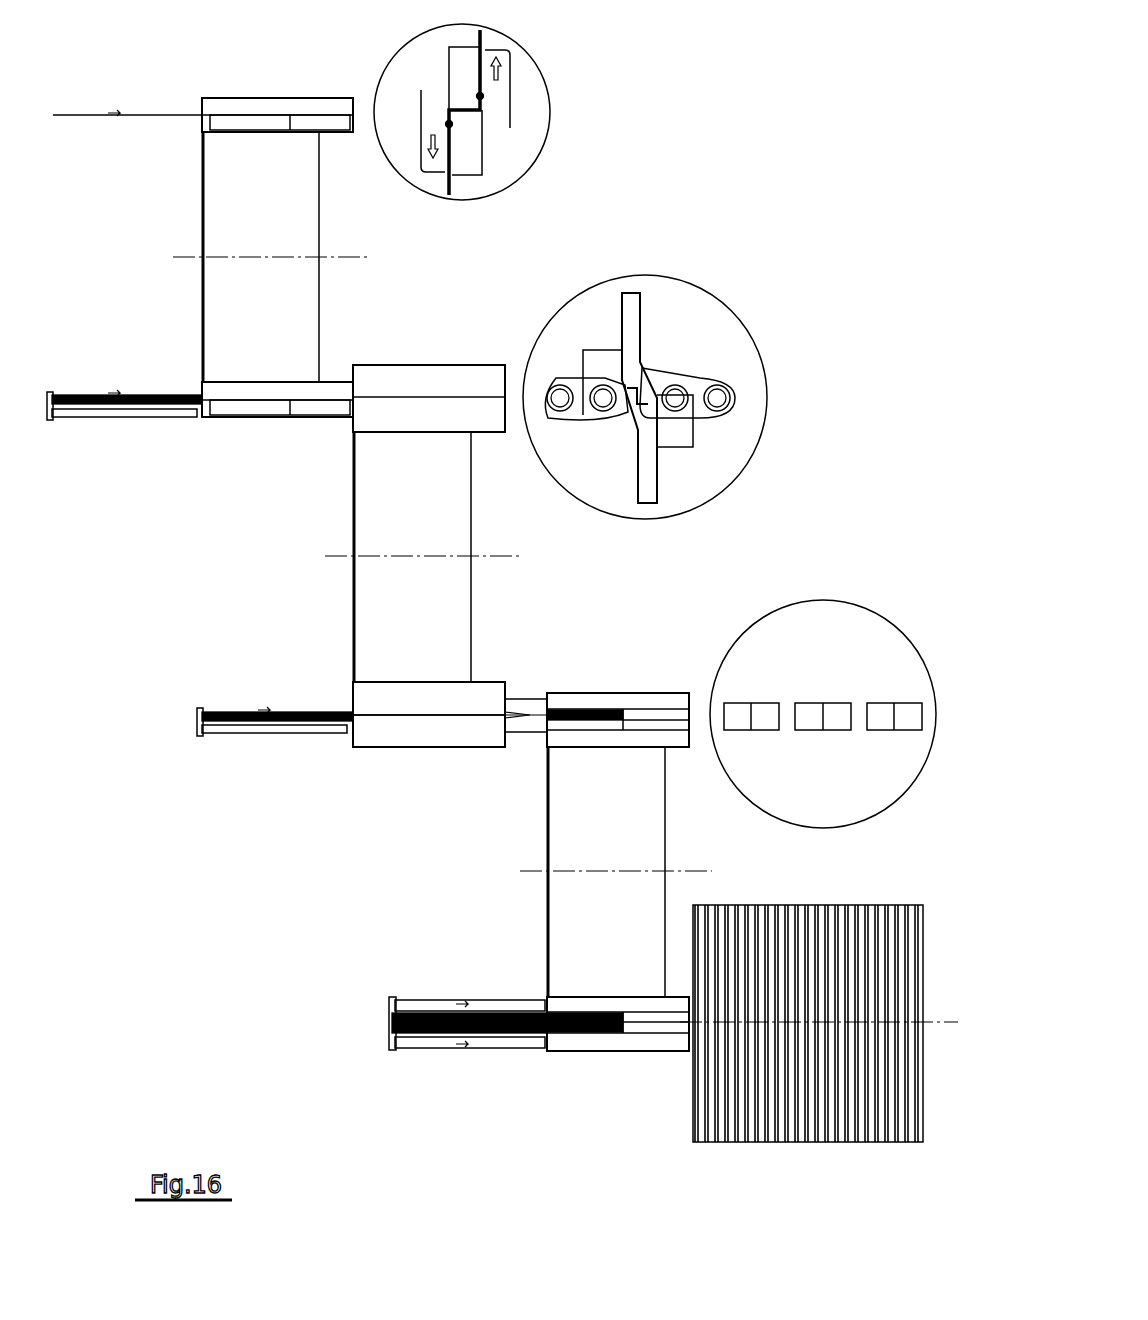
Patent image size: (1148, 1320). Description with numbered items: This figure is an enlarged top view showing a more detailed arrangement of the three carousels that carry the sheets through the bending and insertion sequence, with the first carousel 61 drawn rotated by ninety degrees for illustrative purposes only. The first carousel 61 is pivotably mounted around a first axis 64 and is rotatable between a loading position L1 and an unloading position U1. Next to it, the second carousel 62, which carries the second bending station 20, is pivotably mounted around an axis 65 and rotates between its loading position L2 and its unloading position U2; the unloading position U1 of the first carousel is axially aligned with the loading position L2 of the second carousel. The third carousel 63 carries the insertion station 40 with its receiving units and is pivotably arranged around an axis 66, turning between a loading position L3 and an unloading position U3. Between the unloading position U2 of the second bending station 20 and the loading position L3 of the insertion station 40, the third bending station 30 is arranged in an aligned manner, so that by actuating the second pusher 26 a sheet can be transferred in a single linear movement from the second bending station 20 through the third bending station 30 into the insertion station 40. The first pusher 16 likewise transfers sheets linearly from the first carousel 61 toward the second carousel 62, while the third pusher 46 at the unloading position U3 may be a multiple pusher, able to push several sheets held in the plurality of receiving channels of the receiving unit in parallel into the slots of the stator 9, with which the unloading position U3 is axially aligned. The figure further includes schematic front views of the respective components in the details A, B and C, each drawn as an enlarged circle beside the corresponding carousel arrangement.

The loading position L1 is at (203, 99).
The first carousel 61 is at (293, 214).
The first axis 64 is at (330, 258).
The unloading position U1 is at (250, 388).
The first pusher 16 is at (90, 395).
The loading position L2 is at (450, 388).
The second carousel 62 is at (442, 520).
The axis 65 is at (484, 560).
The second bending station 20 is at (476, 703).
The unloading position U2 is at (418, 730).
The second pusher 26 is at (247, 722).
The third bending station 30 is at (524, 707).
The loading position L3 is at (582, 702).
The insertion station 40 is at (648, 698).
The third carousel 63 is at (636, 818).
The axis 66 is at (680, 872).
The unloading position U3 is at (620, 1042).
The third pusher 46 is at (449, 1038).
The stator 9 is at (813, 1075).
The detail A is at (548, 80).
The detail B is at (757, 345).
The detail C is at (845, 600).